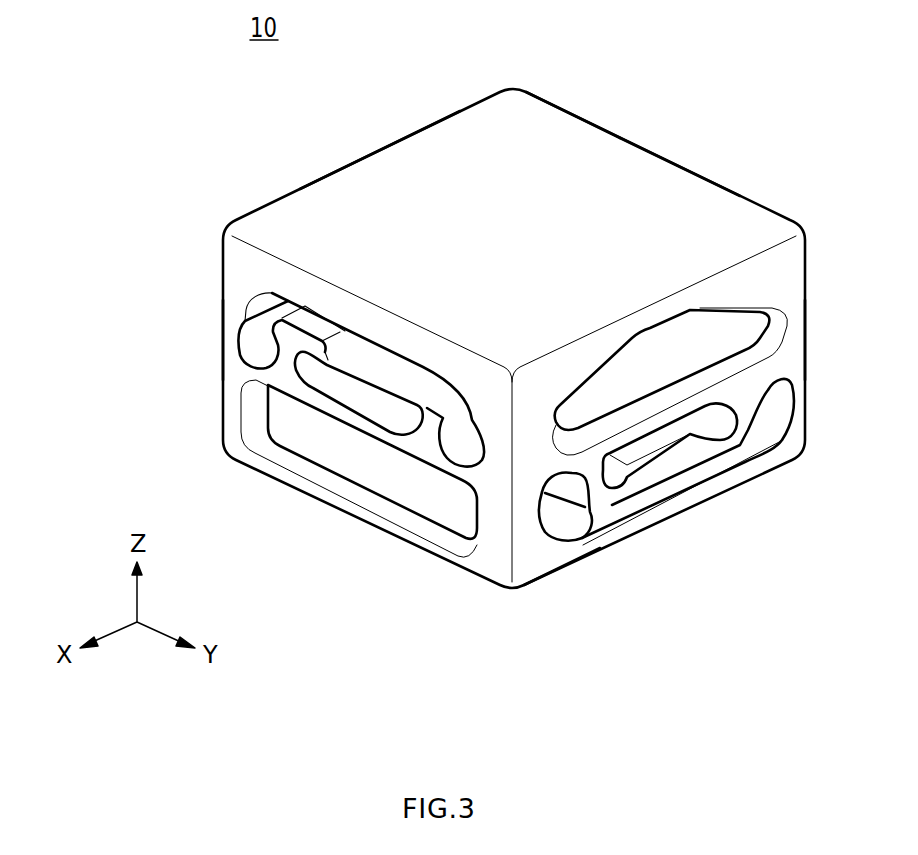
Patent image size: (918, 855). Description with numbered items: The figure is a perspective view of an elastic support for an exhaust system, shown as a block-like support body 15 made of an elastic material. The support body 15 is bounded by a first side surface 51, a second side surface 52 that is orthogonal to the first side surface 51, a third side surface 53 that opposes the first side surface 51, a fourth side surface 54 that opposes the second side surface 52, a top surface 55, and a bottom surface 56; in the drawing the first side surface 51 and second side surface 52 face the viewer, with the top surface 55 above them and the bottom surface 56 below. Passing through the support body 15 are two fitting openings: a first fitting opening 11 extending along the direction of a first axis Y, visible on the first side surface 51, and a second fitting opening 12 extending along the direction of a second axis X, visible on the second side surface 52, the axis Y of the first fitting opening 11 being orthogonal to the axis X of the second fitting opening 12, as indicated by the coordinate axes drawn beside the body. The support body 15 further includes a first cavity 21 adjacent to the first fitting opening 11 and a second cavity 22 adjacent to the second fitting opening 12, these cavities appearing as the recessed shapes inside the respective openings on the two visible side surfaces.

The first fitting opening 11 is at (650, 489).
The second fitting opening 12 is at (360, 352).
The support body 15 is at (730, 183).
The first cavity 21 is at (668, 427).
The second cavity 22 is at (354, 390).
The first side surface 51 is at (793, 281).
The second side surface 52 is at (236, 272).
The third side surface 53 is at (371, 154).
The fourth side surface 54 is at (660, 152).
The top surface 55 is at (563, 125).
The bottom surface 56 is at (563, 573).